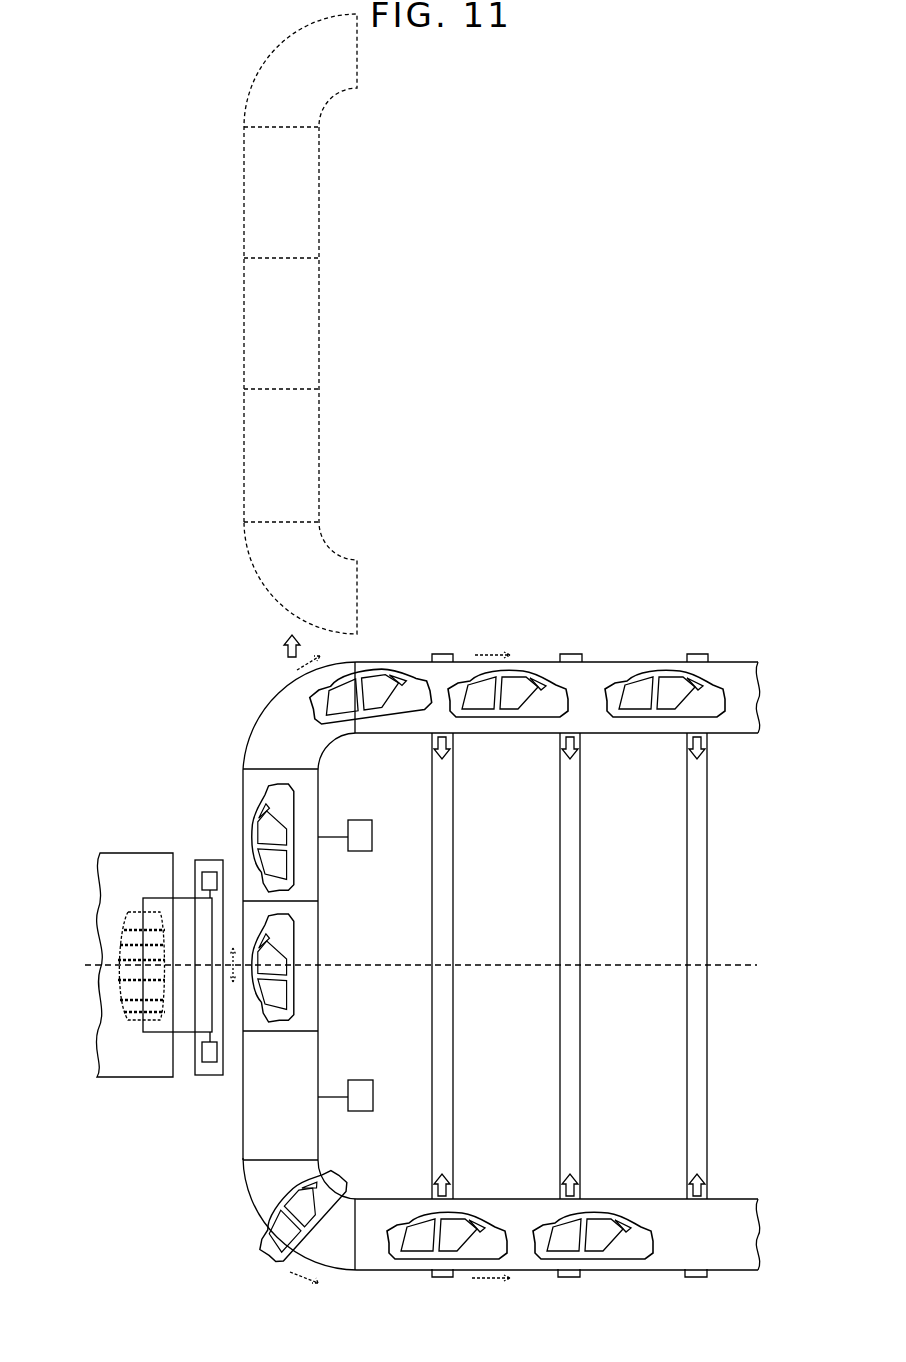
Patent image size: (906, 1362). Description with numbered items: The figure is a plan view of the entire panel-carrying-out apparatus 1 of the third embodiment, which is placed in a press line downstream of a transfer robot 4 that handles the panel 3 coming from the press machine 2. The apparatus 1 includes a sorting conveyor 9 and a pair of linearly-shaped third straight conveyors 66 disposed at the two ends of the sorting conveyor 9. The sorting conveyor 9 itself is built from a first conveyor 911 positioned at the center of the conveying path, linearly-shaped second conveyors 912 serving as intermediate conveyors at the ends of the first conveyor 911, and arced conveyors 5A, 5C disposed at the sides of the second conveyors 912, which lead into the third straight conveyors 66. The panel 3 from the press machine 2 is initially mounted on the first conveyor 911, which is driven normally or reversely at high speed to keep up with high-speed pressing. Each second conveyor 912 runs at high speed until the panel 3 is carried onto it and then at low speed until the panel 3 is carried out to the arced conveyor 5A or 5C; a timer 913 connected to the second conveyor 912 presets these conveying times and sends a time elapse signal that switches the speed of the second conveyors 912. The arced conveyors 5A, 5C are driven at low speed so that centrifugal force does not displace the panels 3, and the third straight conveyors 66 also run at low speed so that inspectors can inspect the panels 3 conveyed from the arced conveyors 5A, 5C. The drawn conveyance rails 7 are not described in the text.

The panel-carrying-out apparatus 1 is at (527, 567).
The press machine 2 is at (138, 853).
The panel 3 is at (413, 682).
The transfer robot 4 is at (211, 860).
The arced conveyor 5A is at (250, 745).
The arced conveyor 5C is at (259, 1205).
The conveyance rail 7 is at (455, 890).
The sorting conveyor 9 is at (243, 183).
The third straight conveyor 66 is at (600, 667).
The first conveyor 911 is at (306, 1000).
The second conveyor 912 is at (306, 797).
The timer 913 is at (362, 851).